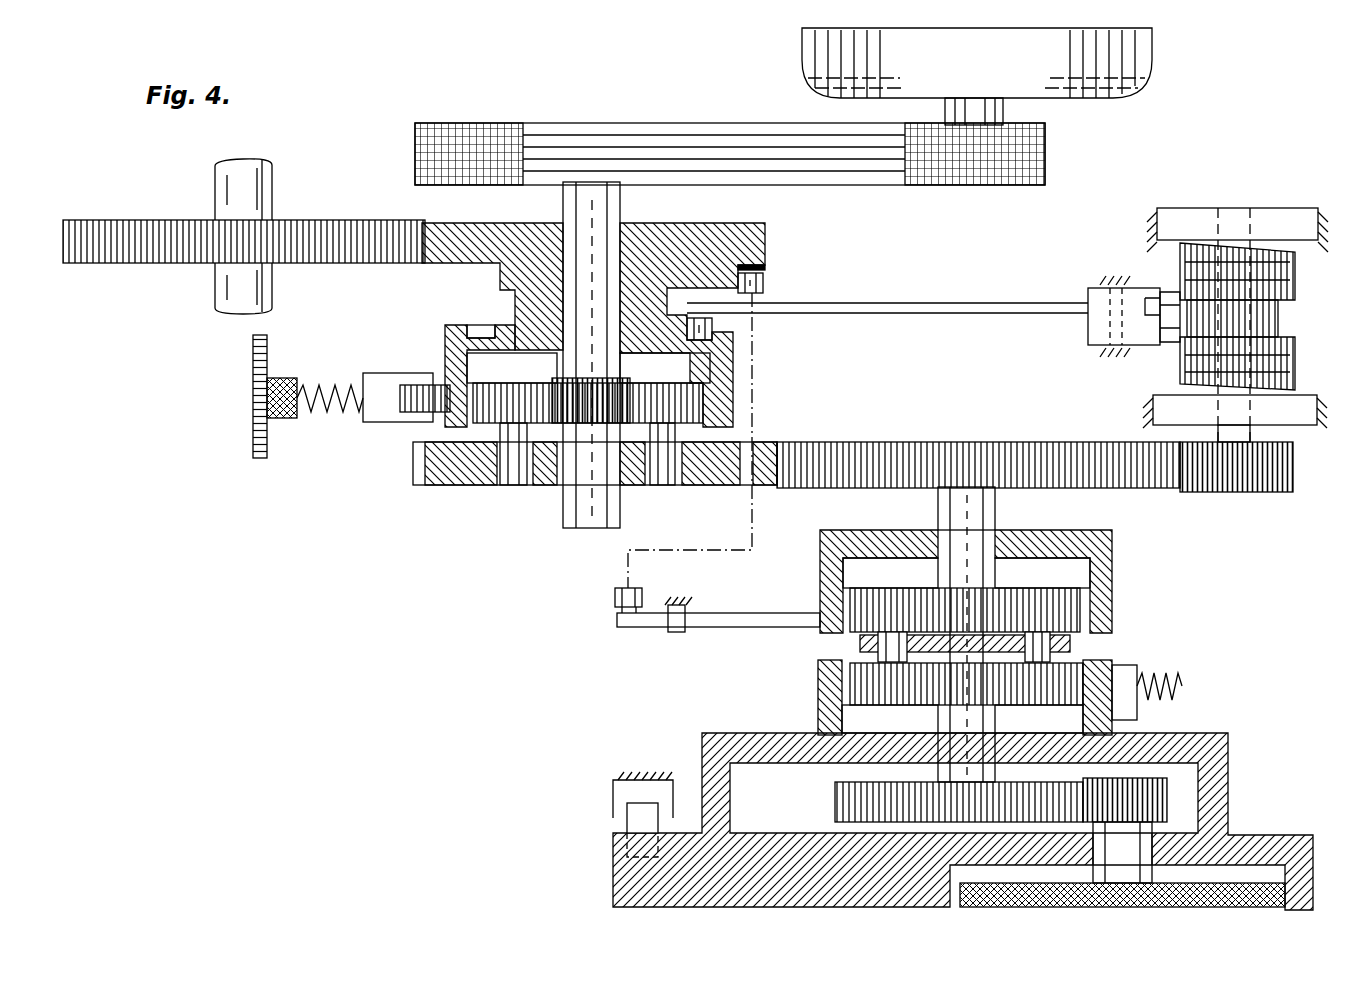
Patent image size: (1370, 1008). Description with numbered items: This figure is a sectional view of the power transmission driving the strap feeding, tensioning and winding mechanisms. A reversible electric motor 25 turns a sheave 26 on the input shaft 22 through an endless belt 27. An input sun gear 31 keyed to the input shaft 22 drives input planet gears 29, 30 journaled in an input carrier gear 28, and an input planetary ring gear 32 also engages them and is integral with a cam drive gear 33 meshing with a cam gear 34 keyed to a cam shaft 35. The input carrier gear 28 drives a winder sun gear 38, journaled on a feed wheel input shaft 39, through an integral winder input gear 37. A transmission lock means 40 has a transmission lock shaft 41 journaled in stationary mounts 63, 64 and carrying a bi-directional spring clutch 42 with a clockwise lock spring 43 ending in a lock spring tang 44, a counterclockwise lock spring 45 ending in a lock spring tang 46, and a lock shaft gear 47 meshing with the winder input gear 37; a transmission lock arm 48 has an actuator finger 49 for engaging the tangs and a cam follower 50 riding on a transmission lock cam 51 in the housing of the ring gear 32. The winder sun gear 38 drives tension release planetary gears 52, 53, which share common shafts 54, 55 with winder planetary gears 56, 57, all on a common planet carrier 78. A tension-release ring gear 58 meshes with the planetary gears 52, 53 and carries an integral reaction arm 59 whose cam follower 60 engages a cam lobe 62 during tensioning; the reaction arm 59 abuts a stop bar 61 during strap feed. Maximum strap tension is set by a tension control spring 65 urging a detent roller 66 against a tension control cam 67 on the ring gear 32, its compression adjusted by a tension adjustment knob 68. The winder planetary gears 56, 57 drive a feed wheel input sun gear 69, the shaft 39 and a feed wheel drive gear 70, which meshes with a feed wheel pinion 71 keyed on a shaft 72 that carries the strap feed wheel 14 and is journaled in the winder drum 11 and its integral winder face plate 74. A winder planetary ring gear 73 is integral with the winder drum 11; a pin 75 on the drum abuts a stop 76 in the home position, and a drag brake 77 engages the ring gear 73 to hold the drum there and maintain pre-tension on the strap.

The winder drum 11 is at (1215, 800).
The strap feed wheel 14 is at (1270, 892).
The input shaft 22 is at (566, 207).
The reversible electric motor 25 is at (1135, 47).
The sheave 26 is at (475, 122).
The endless belt 27 is at (850, 175).
The input carrier gear 28 is at (708, 487).
The input planet gear 29 is at (527, 385).
The input planet gear 30 is at (690, 385).
The input sun gear 31 is at (592, 385).
The input planetary ring gear 32 is at (735, 390).
The cam drive gear 33 is at (770, 235).
The cam gear 34 is at (335, 222).
The cam shaft 35 is at (222, 185).
The winder input gear 37 is at (936, 505).
The winder sun gear 38 is at (975, 590).
The feed wheel input shaft 39 is at (1000, 505).
The transmission lock means 40 is at (1195, 203).
The transmission lock shaft 41 is at (1220, 433).
The bi-directional spring clutch 42 is at (1275, 325).
The clockwise lock spring 43 is at (1280, 270).
The lock spring tang 44 is at (1172, 297).
The counterclockwise lock spring 45 is at (1280, 350).
The lock spring tang 46 is at (1165, 345).
The lock shaft gear 47 is at (1275, 490).
The transmission lock arm 48 is at (992, 302).
The actuator finger 49 is at (1140, 322).
The cam follower 50 is at (690, 330).
The transmission lock cam 51 is at (490, 325).
The tension release planetary gear 52 is at (878, 603).
The tension release planetary gear 53 is at (1060, 600).
The common shaft 54 is at (865, 646).
The common shaft 55 is at (1075, 660).
The winder planetary gear 56 is at (860, 702).
The winder planetary gear 57 is at (1057, 700).
The tension-release ring gear 58 is at (1100, 600).
The cam-controlled reaction arm 59 is at (738, 613).
The cam follower 60 is at (768, 283).
The stop bar 61 is at (677, 633).
The cam lobe 62 is at (765, 270).
The stationary mount 63 is at (1292, 222).
The stationary mount 64 is at (1305, 425).
The tension control spring 65 is at (333, 415).
The detent roller 66 is at (425, 405).
The tension control cam 67 is at (440, 385).
The tension adjustment knob 68 is at (253, 442).
The feed wheel input sun gear 69 is at (975, 715).
The feed wheel drive gear 70 is at (835, 800).
The feed wheel pinion 71 is at (1165, 790).
The shaft 72 is at (1122, 852).
The winder planetary ring gear 73 is at (825, 685).
The winder face plate 74 is at (650, 888).
The pin 75 is at (627, 826).
The stop 76 is at (615, 793).
The drag brake 77 is at (1130, 705).
The common planet carrier 78 is at (1072, 645).